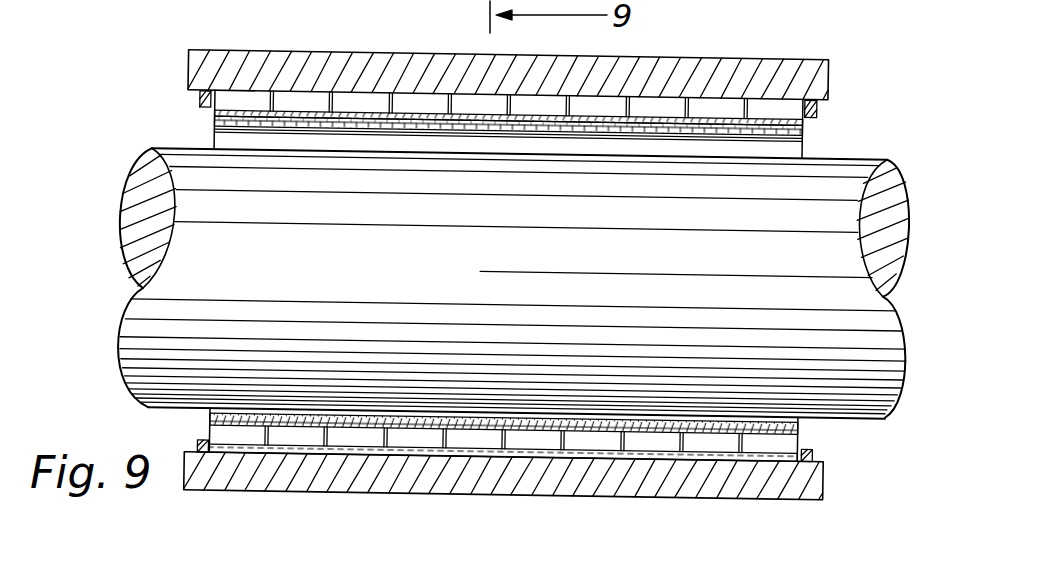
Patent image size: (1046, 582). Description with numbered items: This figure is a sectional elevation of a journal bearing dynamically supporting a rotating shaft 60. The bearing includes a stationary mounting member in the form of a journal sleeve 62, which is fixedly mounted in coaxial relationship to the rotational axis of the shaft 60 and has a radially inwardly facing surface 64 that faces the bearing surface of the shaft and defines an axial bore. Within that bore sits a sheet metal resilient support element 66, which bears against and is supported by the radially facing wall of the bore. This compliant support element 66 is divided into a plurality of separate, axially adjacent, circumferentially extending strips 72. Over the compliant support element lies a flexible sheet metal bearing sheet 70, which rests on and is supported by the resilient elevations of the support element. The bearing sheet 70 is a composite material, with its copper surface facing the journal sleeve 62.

The rotating shaft 60 is at (386, 281).
The journal sleeve 62 is at (791, 55).
The radially inwardly facing surface 64 is at (298, 92).
The sheet metal resilient support element 66 is at (811, 114).
The bearing sheet 70 is at (231, 136).
The circumferentially extending strips 72 is at (444, 98).